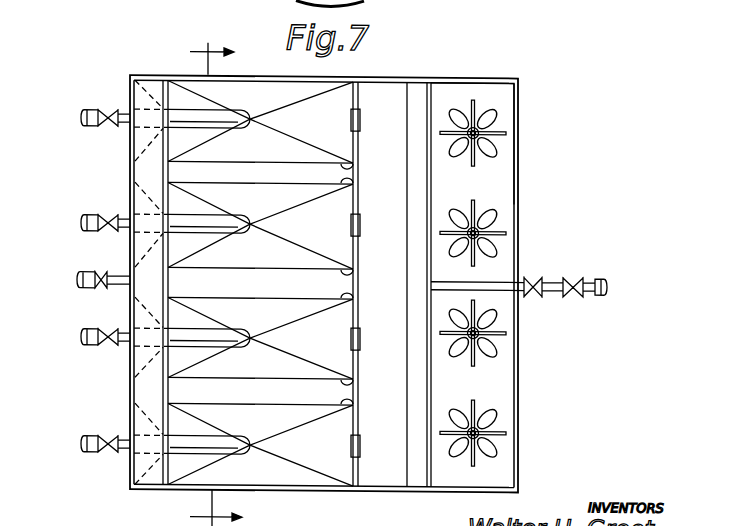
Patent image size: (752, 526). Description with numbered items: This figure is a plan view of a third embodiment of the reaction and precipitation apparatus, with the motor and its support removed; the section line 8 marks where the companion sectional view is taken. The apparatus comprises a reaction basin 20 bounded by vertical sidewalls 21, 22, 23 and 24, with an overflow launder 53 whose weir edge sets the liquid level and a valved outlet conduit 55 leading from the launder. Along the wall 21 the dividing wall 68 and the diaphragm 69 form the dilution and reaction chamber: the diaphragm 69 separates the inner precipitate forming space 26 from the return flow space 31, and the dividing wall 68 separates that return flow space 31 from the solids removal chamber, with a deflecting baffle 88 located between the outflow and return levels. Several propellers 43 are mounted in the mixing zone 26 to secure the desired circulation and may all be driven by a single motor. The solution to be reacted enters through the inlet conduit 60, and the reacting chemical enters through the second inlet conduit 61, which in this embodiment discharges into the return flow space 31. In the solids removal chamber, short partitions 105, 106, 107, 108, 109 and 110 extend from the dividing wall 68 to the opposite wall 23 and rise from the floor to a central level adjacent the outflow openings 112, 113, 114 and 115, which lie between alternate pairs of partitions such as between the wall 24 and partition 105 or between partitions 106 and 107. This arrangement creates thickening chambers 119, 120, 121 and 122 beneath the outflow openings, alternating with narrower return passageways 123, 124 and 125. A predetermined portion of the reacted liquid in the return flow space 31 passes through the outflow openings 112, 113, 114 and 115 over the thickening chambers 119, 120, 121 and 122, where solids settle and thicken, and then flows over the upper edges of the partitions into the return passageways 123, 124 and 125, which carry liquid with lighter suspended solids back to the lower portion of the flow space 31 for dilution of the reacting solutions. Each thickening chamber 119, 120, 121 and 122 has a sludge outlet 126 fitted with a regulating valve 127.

The section line 8 is at (216, 275).
The reaction basin 20 is at (519, 115).
The sidewall 21 is at (518, 210).
The sidewall 22 is at (358, 482).
The sidewall 23 is at (133, 80).
The sidewall 24 is at (246, 77).
The precipitate forming space 26 is at (508, 86).
The return flow space 31 is at (416, 84).
The propeller 43 is at (492, 148).
The overflow launder 53 is at (143, 86).
The outlet conduit 55 is at (91, 272).
The inlet conduit 60 is at (553, 275).
The second inlet conduit 61 is at (524, 275).
The dividing wall 68 is at (359, 88).
The diaphragm 69 is at (432, 88).
The deflecting baffle 88 is at (410, 466).
The short partition 105 is at (345, 157).
The short partition 106 is at (345, 182).
The short partition 107 is at (345, 265).
The short partition 108 is at (345, 295).
The short partition 109 is at (352, 376).
The short partition 110 is at (352, 400).
The outflow opening 112 is at (360, 114).
The outflow opening 113 is at (360, 223).
The outflow opening 114 is at (362, 329).
The outflow opening 115 is at (358, 433).
The thickening chamber 119 is at (181, 83).
The thickening chamber 120 is at (185, 187).
The thickening chamber 121 is at (198, 361).
The thickening chamber 122 is at (272, 475).
The return passageway 123 is at (185, 168).
The return passageway 124 is at (187, 276).
The return passageway 125 is at (193, 391).
The sludge outlet 126 is at (126, 122).
The regulating valve 127 is at (111, 109).